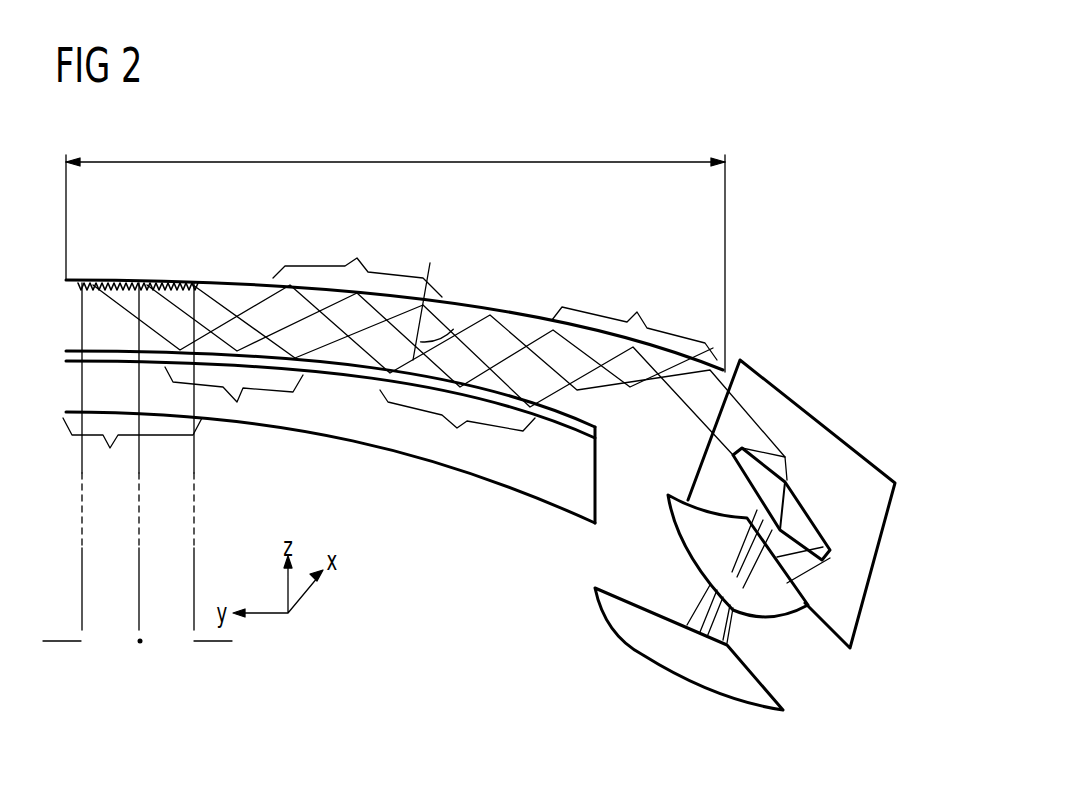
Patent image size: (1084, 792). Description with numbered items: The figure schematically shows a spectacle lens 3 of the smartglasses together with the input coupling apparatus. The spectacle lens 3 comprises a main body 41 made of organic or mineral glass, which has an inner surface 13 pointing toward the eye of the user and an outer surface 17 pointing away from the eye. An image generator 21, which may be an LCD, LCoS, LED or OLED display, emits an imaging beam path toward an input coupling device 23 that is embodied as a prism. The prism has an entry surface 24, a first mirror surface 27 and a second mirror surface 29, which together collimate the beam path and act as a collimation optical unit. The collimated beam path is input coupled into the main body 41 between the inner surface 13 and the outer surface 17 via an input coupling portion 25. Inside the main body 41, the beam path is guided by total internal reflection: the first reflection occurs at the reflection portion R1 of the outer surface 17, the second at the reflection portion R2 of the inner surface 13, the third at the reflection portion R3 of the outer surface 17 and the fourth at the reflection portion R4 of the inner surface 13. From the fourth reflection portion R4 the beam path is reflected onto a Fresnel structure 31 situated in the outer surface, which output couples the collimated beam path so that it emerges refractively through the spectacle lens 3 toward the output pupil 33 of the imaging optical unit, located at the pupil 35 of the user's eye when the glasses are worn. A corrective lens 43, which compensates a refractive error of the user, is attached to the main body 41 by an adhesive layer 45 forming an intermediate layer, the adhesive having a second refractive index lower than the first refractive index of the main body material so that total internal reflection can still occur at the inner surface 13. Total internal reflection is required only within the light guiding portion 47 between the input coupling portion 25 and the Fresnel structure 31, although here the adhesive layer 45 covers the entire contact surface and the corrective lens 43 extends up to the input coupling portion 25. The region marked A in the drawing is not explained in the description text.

The spectacle lens 3 is at (499, 248).
The inner surface 13 is at (327, 365).
The outer surface 17 is at (237, 278).
The image generator 21 is at (830, 557).
The input coupling device 23 is at (890, 545).
The entry surface 24 is at (772, 615).
The input coupling portion 25 is at (643, 421).
The first mirror surface 27 is at (715, 690).
The second mirror surface 29 is at (845, 440).
The Fresnel structure 31 is at (158, 278).
The output pupil 33 is at (210, 643).
The pupil 35 is at (140, 644).
The main body 41 is at (513, 330).
The corrective lens 43 is at (568, 493).
The adhesive layer 45 is at (553, 420).
The light guiding portion 47 is at (388, 162).
The region A is at (132, 453).
The first reflection portion R1 is at (634, 318).
The second reflection portion R2 is at (457, 428).
The third reflection portion R3 is at (357, 259).
The fourth reflection portion R4 is at (237, 402).